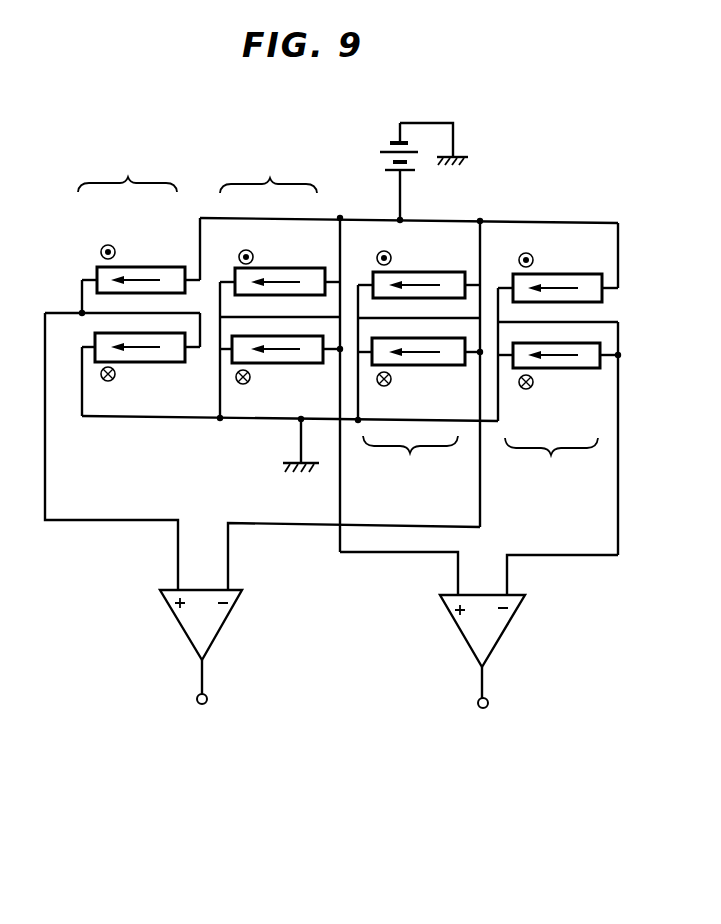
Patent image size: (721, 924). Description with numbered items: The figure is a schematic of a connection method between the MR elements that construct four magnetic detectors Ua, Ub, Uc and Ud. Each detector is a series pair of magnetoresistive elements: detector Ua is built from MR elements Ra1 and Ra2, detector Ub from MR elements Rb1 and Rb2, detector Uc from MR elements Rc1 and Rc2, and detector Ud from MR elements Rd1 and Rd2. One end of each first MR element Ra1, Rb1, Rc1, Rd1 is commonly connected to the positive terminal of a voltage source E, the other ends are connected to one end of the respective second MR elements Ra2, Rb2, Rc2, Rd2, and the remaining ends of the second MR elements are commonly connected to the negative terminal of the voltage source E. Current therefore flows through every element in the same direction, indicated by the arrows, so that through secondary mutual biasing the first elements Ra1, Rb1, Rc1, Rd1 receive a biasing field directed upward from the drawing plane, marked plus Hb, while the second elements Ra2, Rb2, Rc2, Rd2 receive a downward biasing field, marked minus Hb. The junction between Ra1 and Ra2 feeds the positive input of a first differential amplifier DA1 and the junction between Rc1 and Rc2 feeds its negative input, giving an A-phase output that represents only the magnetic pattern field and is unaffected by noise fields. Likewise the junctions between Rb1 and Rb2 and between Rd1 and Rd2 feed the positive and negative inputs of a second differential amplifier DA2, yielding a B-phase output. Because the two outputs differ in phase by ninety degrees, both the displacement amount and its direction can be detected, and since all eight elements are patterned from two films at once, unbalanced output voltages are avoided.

The voltage source E is at (380, 158).
The magnetic detector Ua is at (127, 172).
The magnetic detector Ub is at (268, 173).
The magnetic detector Uc is at (410, 461).
The magnetic detector Ud is at (551, 462).
The first MR element Ra1 is at (157, 267).
The second MR element Ra2 is at (165, 362).
The first MR element Rb1 is at (301, 268).
The second MR element Rb2 is at (300, 363).
The first MR element Rc1 is at (439, 272).
The second MR element Rc2 is at (443, 365).
The first MR element Rd1 is at (580, 274).
The second MR element Rd2 is at (581, 368).
The first differential amplifier DA1 is at (225, 628).
The second differential amplifier DA2 is at (505, 628).